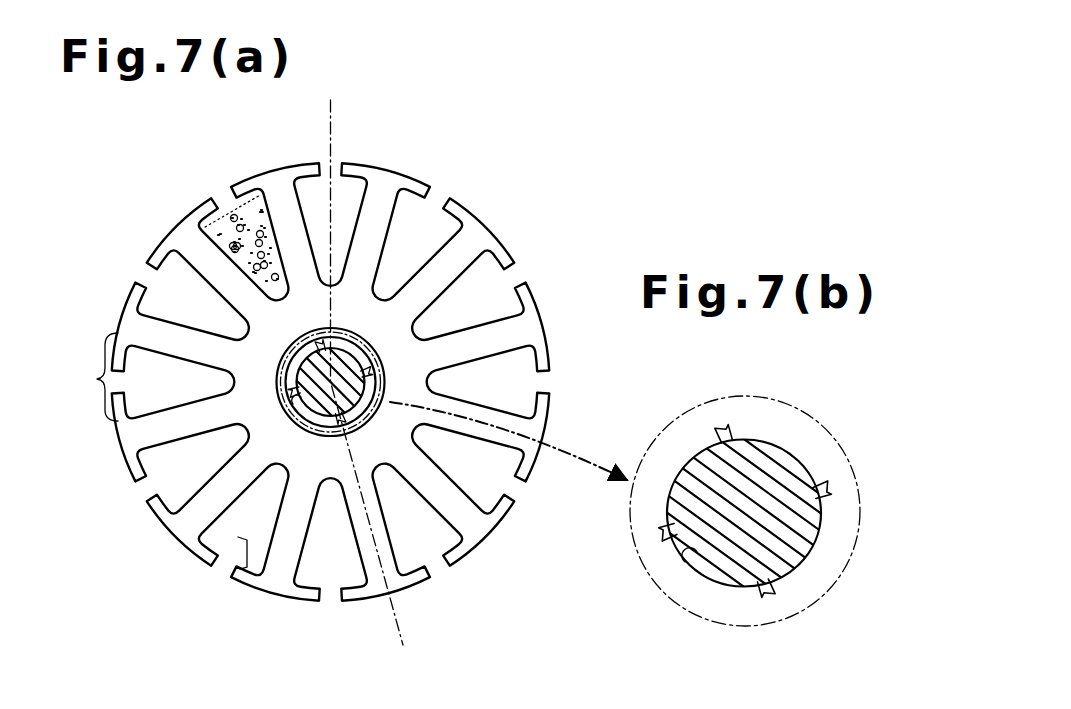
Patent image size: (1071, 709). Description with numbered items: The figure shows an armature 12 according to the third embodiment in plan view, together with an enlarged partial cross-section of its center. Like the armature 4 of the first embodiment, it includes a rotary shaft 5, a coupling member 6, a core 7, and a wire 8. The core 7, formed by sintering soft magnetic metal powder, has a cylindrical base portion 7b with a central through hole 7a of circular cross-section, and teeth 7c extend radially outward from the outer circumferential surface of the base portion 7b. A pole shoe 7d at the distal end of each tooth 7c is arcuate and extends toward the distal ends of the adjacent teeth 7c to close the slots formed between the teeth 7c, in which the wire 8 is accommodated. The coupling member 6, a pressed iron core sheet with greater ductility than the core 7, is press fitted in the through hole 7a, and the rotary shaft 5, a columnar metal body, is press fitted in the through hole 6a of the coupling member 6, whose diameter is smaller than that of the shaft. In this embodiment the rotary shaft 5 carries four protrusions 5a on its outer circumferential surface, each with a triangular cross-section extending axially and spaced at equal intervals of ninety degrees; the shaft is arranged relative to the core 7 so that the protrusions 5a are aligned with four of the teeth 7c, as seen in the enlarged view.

In FIG. 7A, the armature 12 is at (335, 353).
In FIG. 7A, the armature 4 is at (335, 381).
In FIG. 7A, the rotary shaft 5 is at (363, 352).
In FIG. 7B, the rotary shaft 5 is at (770, 448).
In FIG. 7A, the protrusions 5a is at (324, 340).
In FIG. 7B, the protrusions 5a is at (728, 430).
In FIG. 7A, the coupling member 6 is at (297, 343).
In FIG. 7B, the coupling member 6 is at (683, 420).
In FIG. 7A, the through hole 6a is at (297, 392).
In FIG. 7B, the through hole 6a is at (690, 565).
In FIG. 7A, the core 7 is at (323, 381).
In FIG. 7A, the through hole 7a is at (309, 428).
In FIG. 7A, the base portion 7b is at (415, 389).
In FIG. 7A, the teeth 7c is at (89, 377).
In FIG. 7A, the pole shoe 7d is at (243, 552).
In FIG. 7A, the wire 8 is at (205, 204).